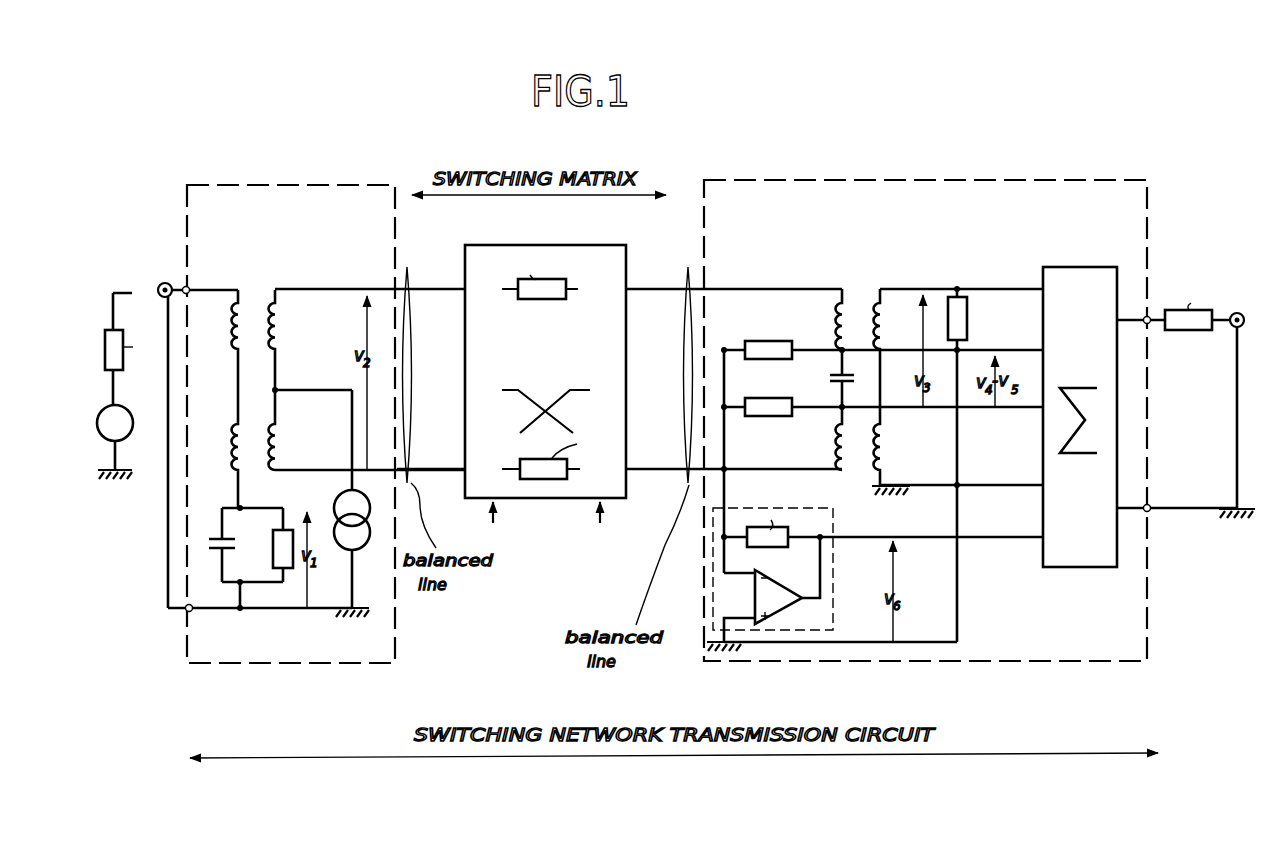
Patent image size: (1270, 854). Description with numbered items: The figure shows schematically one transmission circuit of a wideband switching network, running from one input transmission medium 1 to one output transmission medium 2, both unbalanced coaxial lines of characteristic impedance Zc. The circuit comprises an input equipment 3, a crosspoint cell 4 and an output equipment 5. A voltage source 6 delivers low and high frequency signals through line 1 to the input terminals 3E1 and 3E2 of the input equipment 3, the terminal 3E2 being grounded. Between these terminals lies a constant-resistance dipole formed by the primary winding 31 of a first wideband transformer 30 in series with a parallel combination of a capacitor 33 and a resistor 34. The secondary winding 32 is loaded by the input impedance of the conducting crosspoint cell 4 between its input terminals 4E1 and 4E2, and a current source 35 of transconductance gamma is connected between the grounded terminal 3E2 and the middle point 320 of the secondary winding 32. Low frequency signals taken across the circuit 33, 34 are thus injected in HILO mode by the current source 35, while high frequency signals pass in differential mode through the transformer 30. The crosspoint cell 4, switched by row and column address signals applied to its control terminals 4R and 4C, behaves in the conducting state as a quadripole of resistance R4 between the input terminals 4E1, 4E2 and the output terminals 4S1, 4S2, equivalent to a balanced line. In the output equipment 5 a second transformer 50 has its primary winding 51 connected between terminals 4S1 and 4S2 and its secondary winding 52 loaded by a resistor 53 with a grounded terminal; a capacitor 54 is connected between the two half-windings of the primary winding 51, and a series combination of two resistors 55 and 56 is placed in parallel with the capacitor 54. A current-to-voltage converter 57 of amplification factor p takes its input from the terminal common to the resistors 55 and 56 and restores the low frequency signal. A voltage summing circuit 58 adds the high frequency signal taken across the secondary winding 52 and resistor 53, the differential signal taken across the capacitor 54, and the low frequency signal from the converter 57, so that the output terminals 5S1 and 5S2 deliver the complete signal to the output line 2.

The input transmission medium 1 is at (121, 292).
The output transmission medium 2 is at (1236, 312).
The input equipment 3 is at (346, 251).
The crosspoint cell 4 is at (548, 245).
The output equipment 5 is at (1040, 227).
The voltage source 6 is at (134, 423).
The first wideband transformer 30 is at (327, 385).
The primary winding 31 is at (231, 350).
The secondary winding 32 is at (265, 428).
The middle point 320 is at (278, 392).
The capacitor 33 is at (209, 542).
The resistor 34 is at (291, 570).
The current source 35 is at (337, 506).
The input terminal 3E1 is at (186, 286).
The input terminal 3E2 is at (187, 610).
The input terminal 4E1 is at (461, 293).
The input terminal 4E2 is at (466, 463).
The output terminal 4S1 is at (628, 294).
The output terminal 4S2 is at (632, 466).
The control terminal 4R is at (495, 519).
The control terminal 4C is at (598, 519).
The second transformer 50 is at (894, 375).
The primary winding 51 is at (838, 342).
The secondary winding 52 is at (819, 453).
The resistor 53 is at (968, 307).
The capacitor 54 is at (830, 378).
The resistor 55 is at (770, 340).
The resistor 56 is at (781, 417).
The current-to-voltage converter 57 is at (834, 512).
The voltage summing circuit 58 is at (1075, 568).
The output terminal 5S1 is at (1148, 326).
The output terminal 5S2 is at (1152, 504).